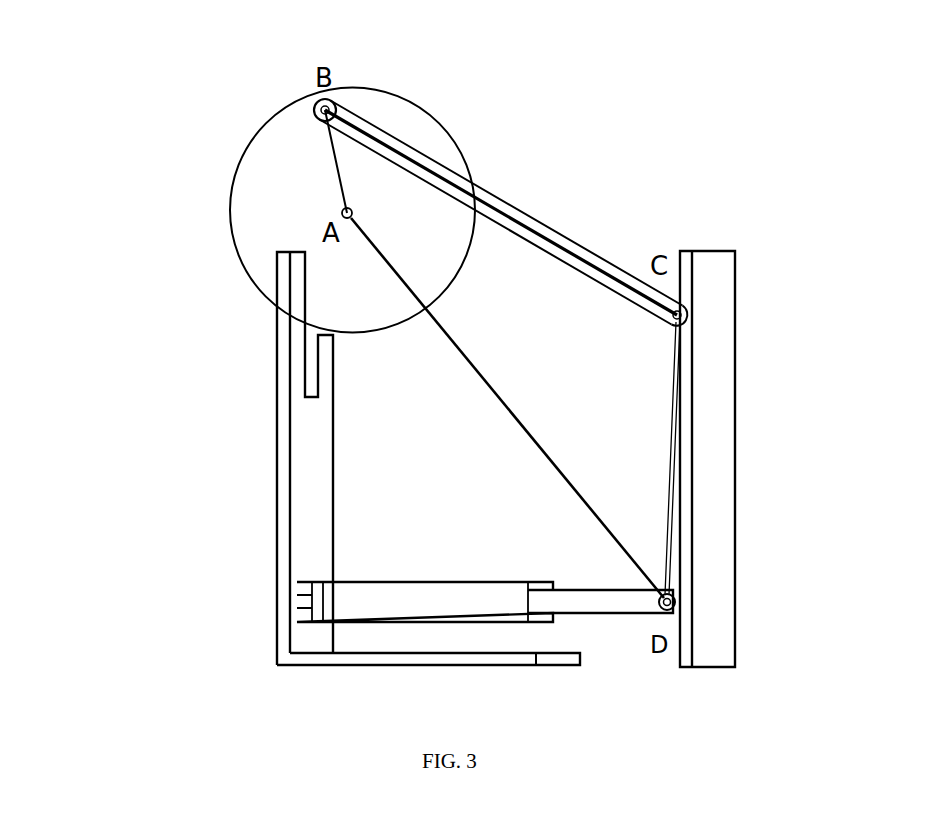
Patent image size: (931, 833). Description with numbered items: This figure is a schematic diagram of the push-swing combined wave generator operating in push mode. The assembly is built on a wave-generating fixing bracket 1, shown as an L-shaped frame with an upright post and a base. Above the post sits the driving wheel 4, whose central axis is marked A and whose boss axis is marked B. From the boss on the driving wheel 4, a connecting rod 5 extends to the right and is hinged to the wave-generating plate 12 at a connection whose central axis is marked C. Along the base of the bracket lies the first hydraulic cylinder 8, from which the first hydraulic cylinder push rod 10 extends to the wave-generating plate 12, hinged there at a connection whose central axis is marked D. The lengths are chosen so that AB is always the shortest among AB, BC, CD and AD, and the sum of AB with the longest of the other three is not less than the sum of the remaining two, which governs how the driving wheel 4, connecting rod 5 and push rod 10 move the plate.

The wave-generating fixing bracket 1 is at (312, 510).
The driving wheel 4 is at (266, 168).
The connecting rod 5 is at (523, 222).
The first hydraulic cylinder 8 is at (440, 597).
The first hydraulic cylinder push rod 10 is at (607, 602).
The wave-generating plate 12 is at (715, 322).